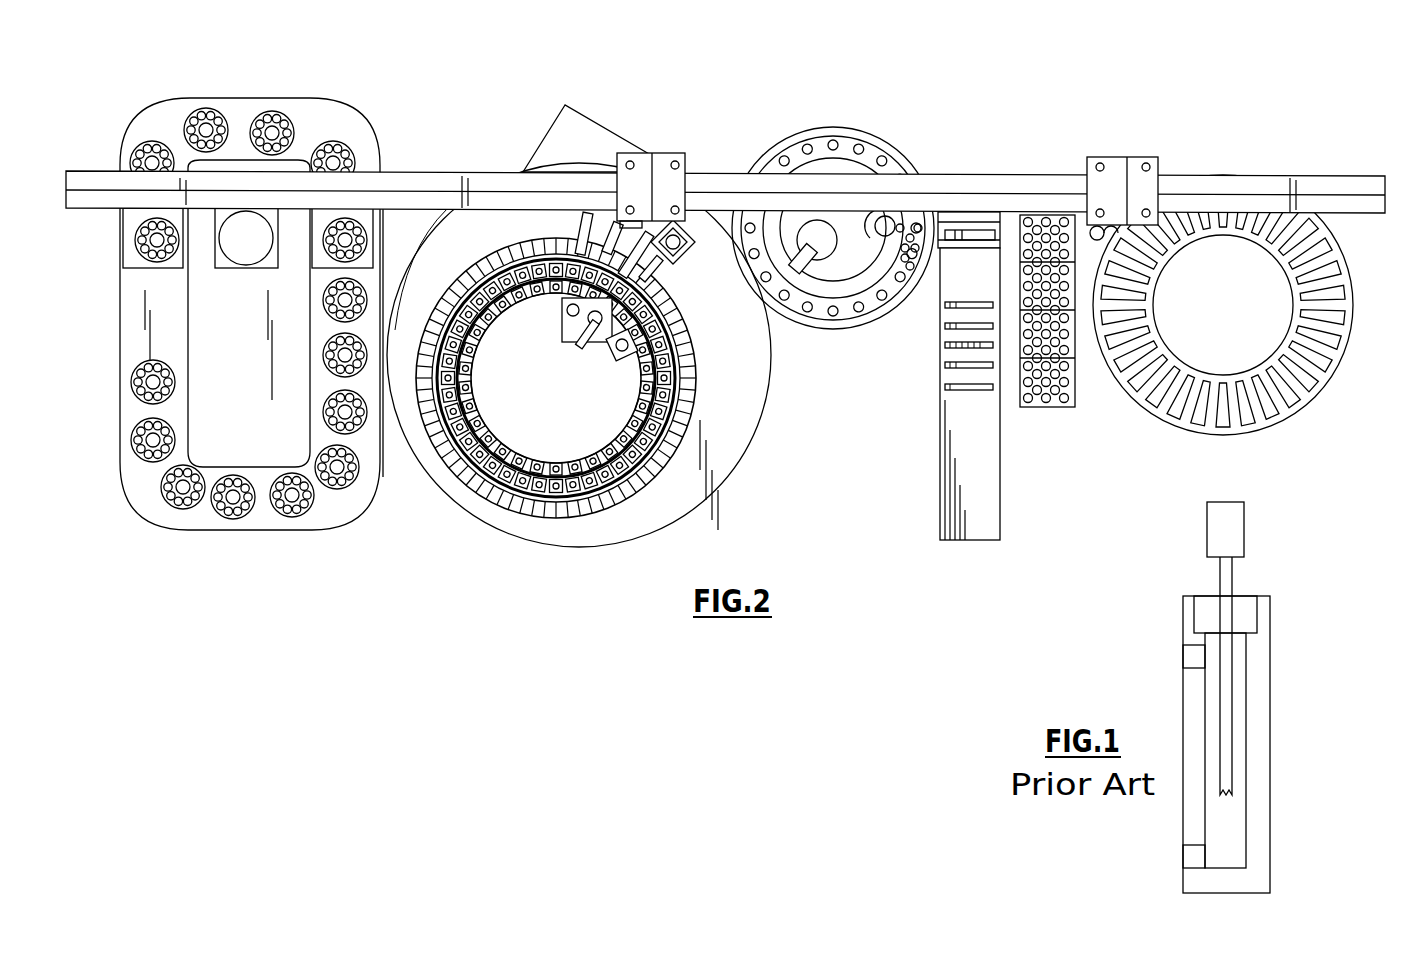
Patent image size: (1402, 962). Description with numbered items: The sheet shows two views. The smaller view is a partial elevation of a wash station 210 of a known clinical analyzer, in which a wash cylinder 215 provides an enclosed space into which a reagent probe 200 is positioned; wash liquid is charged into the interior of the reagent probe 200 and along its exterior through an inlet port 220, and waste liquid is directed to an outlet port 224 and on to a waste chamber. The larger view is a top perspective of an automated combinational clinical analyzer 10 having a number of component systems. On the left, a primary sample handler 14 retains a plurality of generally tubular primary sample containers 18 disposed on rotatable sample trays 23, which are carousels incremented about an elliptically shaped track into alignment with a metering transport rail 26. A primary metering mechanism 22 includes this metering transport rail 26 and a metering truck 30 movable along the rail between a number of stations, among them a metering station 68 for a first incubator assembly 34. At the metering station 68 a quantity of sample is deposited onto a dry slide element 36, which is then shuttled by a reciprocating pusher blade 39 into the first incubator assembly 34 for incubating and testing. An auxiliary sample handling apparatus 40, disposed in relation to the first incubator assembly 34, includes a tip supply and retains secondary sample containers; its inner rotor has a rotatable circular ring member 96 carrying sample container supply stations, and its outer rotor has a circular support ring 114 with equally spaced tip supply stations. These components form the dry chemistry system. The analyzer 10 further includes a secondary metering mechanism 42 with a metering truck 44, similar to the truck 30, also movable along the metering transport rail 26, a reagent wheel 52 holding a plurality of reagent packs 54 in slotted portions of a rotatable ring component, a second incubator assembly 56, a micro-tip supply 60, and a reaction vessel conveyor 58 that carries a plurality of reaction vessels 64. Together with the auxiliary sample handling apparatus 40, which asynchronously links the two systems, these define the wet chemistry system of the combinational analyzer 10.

In FIG. 2, the automated combinational clinical analyzer 10 is at (400, 88).
In FIG. 2, the primary sample handler 14 is at (260, 520).
In FIG. 2, the primary sample container 18 is at (312, 498).
In FIG. 2, the primary metering mechanism 22 is at (442, 168).
In FIG. 2, the rotatable sample tray 23 is at (162, 487).
In FIG. 2, the metering transport rail 26 is at (108, 178).
In FIG. 2, the metering truck 30 is at (657, 165).
In FIG. 2, the first incubator assembly 34 is at (592, 534).
In FIG. 2, the dry slide element 36 is at (585, 236).
In FIG. 2, the reciprocating pusher blade 39 is at (620, 237).
In FIG. 2, the auxiliary sample handling apparatus 40 is at (832, 328).
In FIG. 2, the secondary metering mechanism 42 is at (1275, 166).
In FIG. 2, the metering truck 44 is at (1120, 165).
In FIG. 2, the reagent wheel 52 is at (1227, 430).
In FIG. 2, the reagent pack 54 is at (1340, 276).
In FIG. 2, the second incubator assembly 56 is at (1010, 215).
In FIG. 2, the reaction vessel conveyor 58 is at (975, 532).
In FIG. 2, the micro-tip supply 60 is at (1045, 408).
In FIG. 2, the reaction vessel 64 is at (973, 230).
In FIG. 2, the metering station 68 is at (678, 252).
In FIG. 2, the rotatable circular ring member 96 is at (847, 163).
In FIG. 2, the circular support ring 114 is at (812, 145).
In FIG. 1, the reagent probe 200 is at (1233, 530).
In FIG. 1, the wash station 210 is at (1302, 767).
In FIG. 1, the wash cylinder 215 is at (1230, 823).
In FIG. 1, the inlet port 220 is at (1185, 655).
In FIG. 1, the outlet port 224 is at (1188, 858).